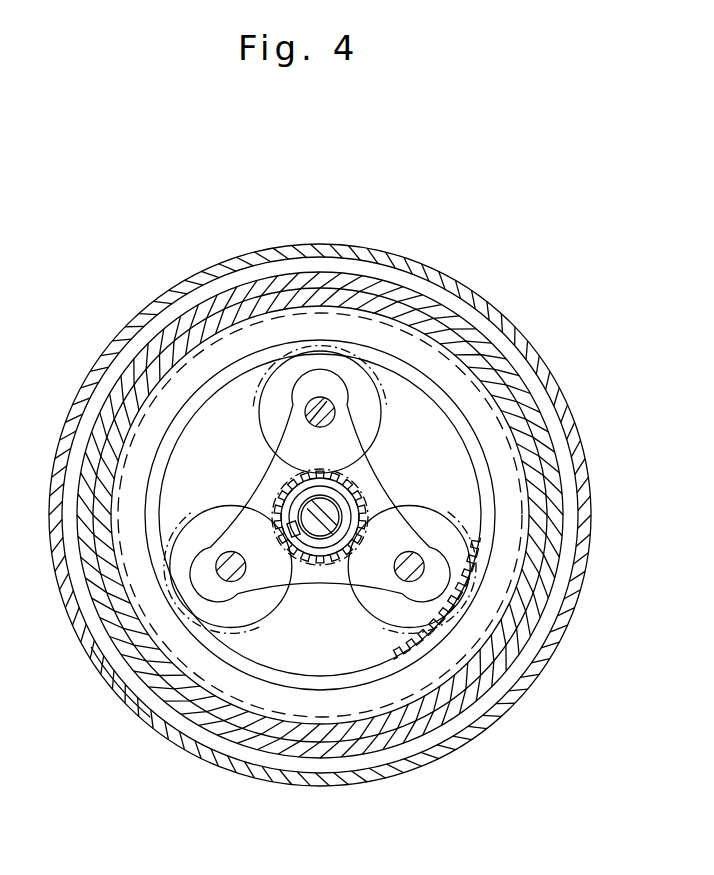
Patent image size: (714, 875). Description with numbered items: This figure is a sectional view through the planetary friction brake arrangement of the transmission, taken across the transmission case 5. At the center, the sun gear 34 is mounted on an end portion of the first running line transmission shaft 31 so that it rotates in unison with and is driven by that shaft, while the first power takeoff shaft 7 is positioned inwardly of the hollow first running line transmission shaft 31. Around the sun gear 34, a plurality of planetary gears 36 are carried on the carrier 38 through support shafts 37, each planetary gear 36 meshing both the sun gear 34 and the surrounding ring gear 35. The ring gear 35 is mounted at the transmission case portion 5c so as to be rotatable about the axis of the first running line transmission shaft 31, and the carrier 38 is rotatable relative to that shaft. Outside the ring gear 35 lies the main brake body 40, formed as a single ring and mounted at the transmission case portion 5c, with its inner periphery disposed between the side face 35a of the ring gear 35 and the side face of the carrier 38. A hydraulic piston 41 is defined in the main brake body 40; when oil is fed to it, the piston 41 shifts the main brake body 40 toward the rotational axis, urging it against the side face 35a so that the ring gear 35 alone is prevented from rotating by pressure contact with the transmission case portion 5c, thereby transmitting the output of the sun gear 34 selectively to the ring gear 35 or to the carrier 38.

The transmission case 5 is at (494, 307).
The transmission case portion 5c is at (93, 650).
The hydraulic piston 41 is at (122, 412).
The side face of the ring gear 35a is at (516, 490).
The main brake body 40 is at (510, 542).
The ring gear 35 is at (478, 588).
The planetary gears 36 is at (362, 425).
The first running line transmission shaft 31 is at (291, 590).
The support shafts 37 is at (315, 419).
The first power takeoff shaft 7 is at (330, 470).
The carrier 38 is at (327, 563).
The sun gear 34 is at (352, 548).